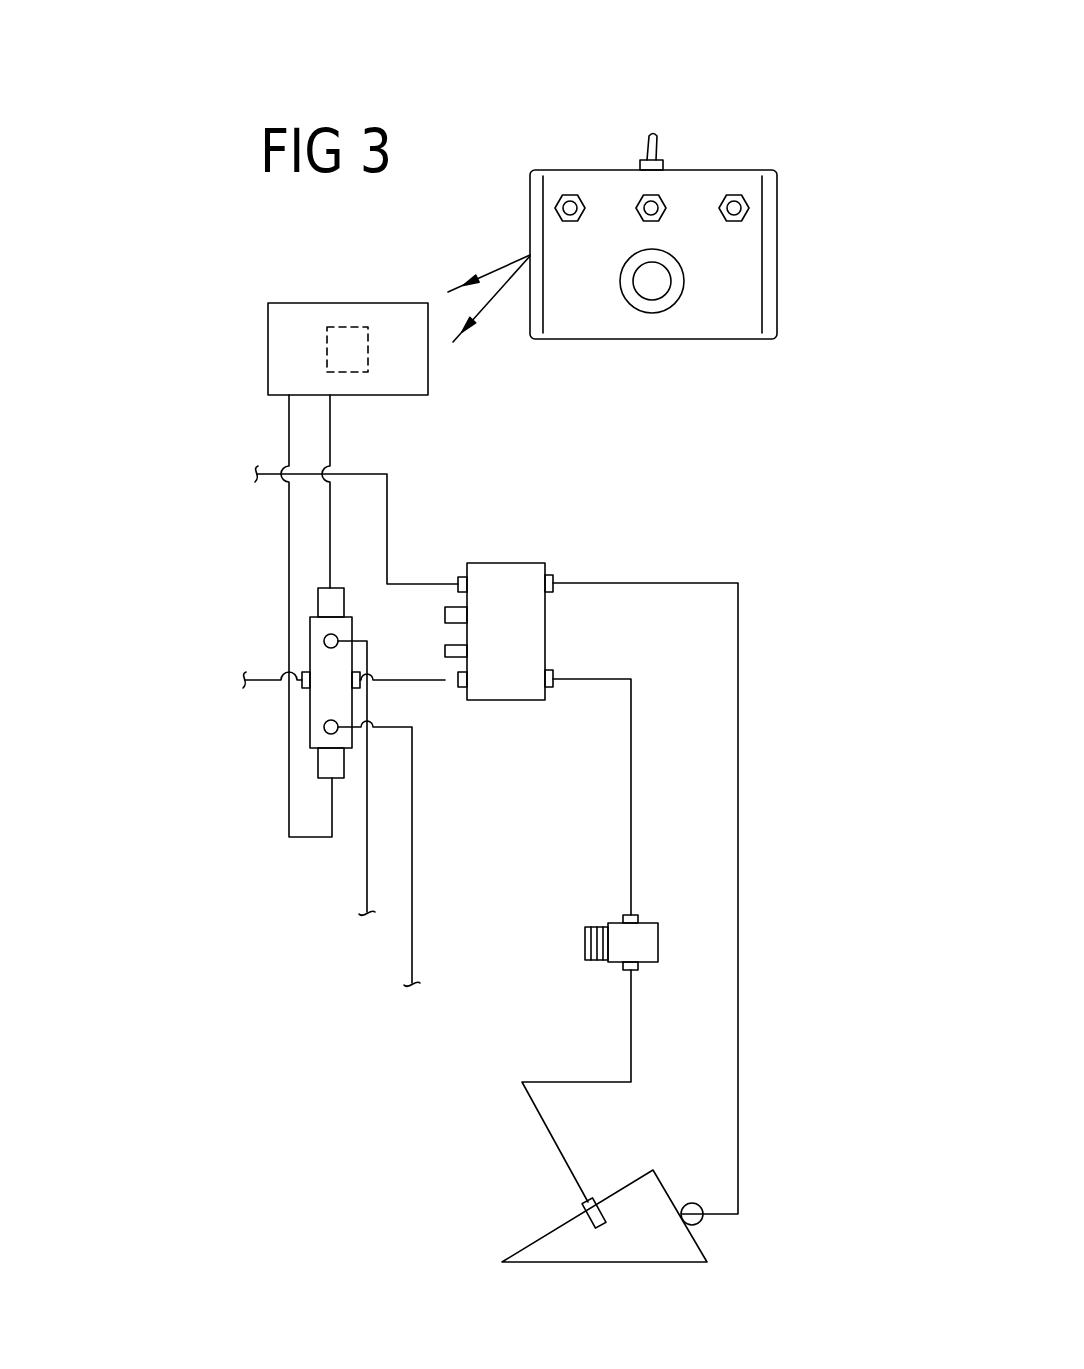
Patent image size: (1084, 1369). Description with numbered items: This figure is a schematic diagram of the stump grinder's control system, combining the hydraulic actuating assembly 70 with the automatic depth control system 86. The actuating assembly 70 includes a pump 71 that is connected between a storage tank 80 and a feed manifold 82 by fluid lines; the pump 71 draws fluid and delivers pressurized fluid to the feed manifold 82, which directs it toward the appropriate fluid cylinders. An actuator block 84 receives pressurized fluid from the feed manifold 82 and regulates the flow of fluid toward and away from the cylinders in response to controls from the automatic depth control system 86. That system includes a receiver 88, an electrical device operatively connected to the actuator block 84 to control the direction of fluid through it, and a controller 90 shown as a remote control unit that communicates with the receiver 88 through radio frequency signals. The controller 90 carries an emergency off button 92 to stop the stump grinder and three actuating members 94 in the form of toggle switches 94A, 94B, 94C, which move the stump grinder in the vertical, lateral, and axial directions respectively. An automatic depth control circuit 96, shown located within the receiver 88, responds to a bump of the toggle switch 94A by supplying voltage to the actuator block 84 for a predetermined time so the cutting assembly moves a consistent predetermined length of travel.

The actuating assembly 70 is at (276, 568).
The pump 71 is at (617, 930).
The storage tank 80 is at (617, 1253).
The feed manifold 82 is at (495, 573).
The actuator block 84 is at (313, 645).
The automatic depth control system 86 is at (294, 312).
The receiver 88 is at (268, 348).
The controller 90 is at (637, 218).
The emergency off button 92 is at (653, 310).
The actuating member 94 is at (659, 120).
The toggle switch 94A is at (568, 200).
The toggle switch 94B is at (637, 203).
The toggle switch 94C is at (742, 200).
The automatic depth control circuit 96 is at (350, 323).